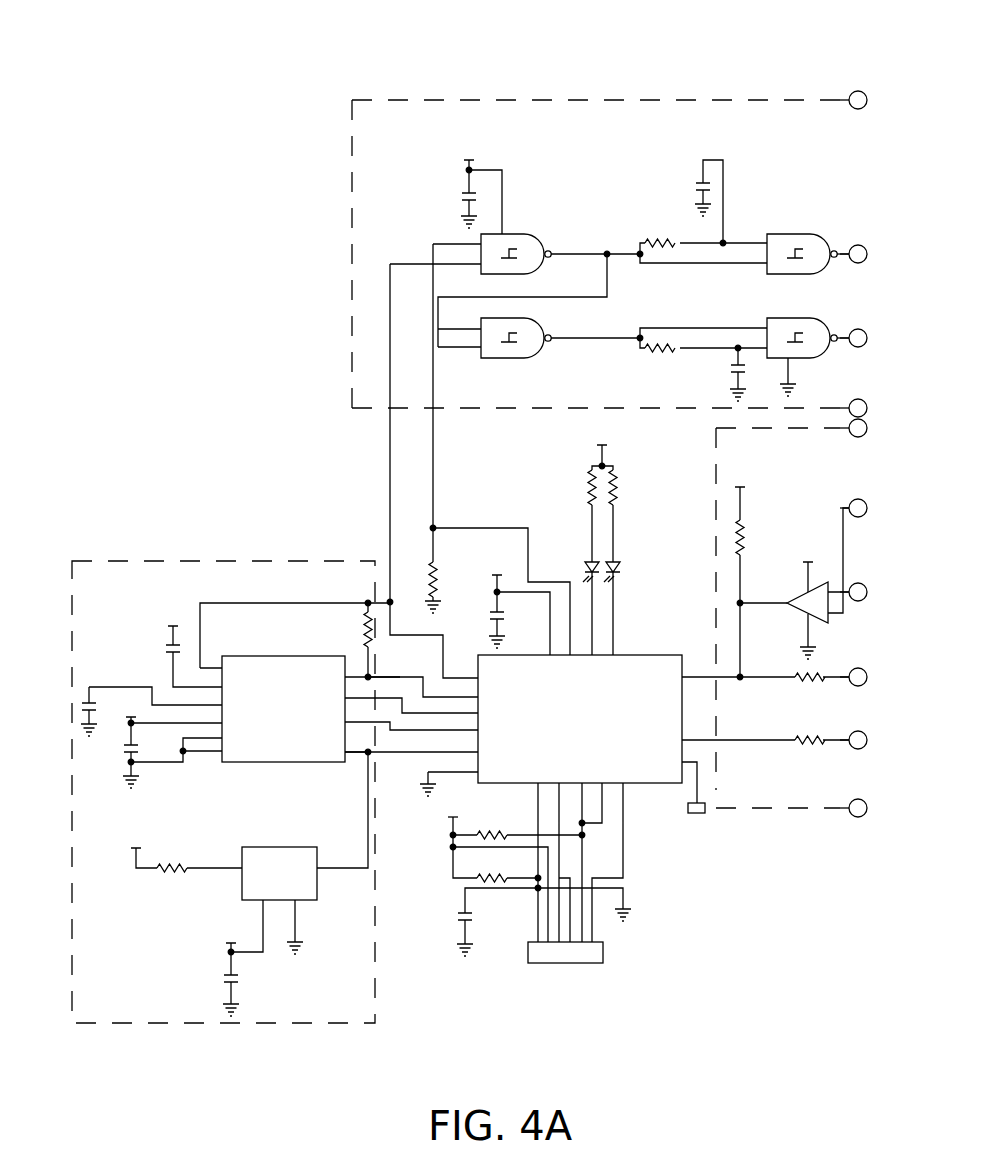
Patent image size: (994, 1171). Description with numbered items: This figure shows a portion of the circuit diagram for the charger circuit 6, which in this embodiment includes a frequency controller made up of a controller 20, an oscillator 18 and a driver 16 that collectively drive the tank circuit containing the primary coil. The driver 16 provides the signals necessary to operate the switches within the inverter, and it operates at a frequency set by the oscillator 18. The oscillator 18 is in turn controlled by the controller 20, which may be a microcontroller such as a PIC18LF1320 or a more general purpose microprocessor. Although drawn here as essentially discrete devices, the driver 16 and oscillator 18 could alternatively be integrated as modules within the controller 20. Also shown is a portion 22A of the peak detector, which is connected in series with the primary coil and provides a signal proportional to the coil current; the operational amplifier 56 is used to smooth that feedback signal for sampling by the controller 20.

The charger circuit 6 is at (195, 222).
The driver 16 is at (408, 98).
The oscillator 18 is at (149, 561).
The controller 20 is at (634, 781).
The peak detector portion 22A is at (770, 810).
The operational amplifier 56 is at (828, 623).